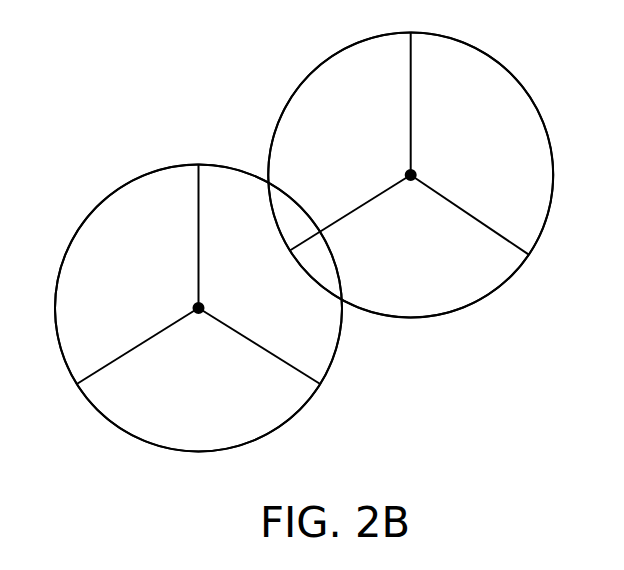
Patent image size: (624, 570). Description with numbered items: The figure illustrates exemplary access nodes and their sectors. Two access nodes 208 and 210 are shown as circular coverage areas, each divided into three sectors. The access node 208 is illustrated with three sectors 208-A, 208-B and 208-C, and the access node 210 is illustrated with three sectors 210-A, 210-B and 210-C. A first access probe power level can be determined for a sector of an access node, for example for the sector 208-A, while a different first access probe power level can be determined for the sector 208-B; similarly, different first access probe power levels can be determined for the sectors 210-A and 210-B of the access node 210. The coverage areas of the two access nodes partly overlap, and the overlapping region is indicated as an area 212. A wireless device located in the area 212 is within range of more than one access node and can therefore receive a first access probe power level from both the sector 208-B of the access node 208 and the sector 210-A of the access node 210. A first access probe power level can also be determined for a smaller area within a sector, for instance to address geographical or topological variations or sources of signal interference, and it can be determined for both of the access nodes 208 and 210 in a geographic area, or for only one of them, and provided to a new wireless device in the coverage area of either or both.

The access node 208 is at (195, 308).
The sector 208-A is at (126, 275).
The sector 208-B is at (270, 275).
The sector 208-C is at (198, 417).
The access node 210 is at (407, 175).
The sector 210-A is at (339, 142).
The sector 210-B is at (482, 144).
The sector 210-C is at (409, 281).
The area 212 is at (283, 215).